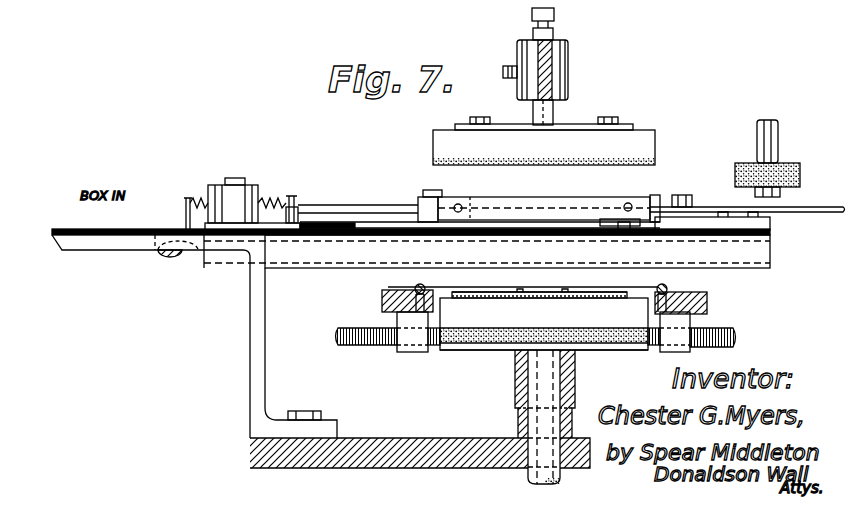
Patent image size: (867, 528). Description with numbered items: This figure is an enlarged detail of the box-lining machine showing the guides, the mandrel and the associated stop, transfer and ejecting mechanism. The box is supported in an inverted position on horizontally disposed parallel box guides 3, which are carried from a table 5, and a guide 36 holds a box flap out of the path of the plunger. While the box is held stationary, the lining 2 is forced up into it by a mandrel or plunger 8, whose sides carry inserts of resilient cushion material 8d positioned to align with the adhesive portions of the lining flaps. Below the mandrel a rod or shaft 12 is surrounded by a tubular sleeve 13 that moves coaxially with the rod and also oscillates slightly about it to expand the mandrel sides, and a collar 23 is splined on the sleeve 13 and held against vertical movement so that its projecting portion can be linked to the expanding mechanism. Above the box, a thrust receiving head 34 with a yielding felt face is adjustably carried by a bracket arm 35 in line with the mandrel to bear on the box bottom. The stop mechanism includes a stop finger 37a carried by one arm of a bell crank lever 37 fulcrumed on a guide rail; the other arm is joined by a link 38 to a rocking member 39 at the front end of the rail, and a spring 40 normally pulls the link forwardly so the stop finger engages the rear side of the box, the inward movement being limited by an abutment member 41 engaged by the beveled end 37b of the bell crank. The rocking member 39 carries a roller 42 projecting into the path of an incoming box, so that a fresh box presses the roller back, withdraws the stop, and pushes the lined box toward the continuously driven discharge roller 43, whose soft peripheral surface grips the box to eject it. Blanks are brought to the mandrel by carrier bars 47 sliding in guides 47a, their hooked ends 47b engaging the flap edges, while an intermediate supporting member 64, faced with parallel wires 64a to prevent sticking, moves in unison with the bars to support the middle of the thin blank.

The lining 2 is at (548, 292).
The box guides 3 is at (790, 213).
The table 5 is at (398, 448).
The mandrel 8 is at (497, 352).
The inserts of cushion material 8d is at (470, 352).
The rod 12 is at (545, 484).
The sleeve 13 is at (533, 427).
The collar 23 is at (517, 410).
The thrust receiving head 34 is at (612, 148).
The bracket arm 35 is at (568, 75).
The guide 36 is at (337, 258).
The bell crank lever 37 is at (703, 232).
The stop finger 37a is at (683, 192).
The beveled end 37b is at (612, 224).
The link 38 is at (378, 212).
The rocking member 39 is at (282, 218).
The spring 40 is at (204, 196).
The abutment member 41 is at (625, 230).
The roller 42 is at (258, 192).
The discharge roller 43 is at (745, 168).
The carrier bars 47 is at (397, 318).
The guides 47a is at (382, 300).
The hooked ends 47b is at (418, 285).
The intermediate supporting member 64 is at (497, 292).
The wires 64a is at (567, 293).